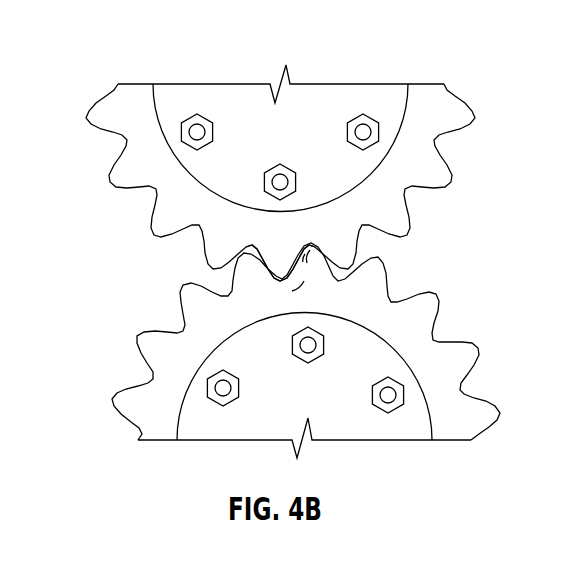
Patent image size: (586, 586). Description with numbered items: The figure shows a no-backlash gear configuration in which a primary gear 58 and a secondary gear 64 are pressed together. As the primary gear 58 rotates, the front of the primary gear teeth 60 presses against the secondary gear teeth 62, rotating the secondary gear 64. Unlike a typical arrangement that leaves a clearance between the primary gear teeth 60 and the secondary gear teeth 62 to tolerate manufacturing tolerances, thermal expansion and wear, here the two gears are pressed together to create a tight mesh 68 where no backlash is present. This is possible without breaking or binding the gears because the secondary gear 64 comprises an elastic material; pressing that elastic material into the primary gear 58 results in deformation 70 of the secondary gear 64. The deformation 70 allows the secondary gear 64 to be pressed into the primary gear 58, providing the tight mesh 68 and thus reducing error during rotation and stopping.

The primary gear 58 is at (200, 103).
The primary gear teeth 60 is at (121, 176).
The secondary gear teeth 62 is at (152, 345).
The secondary gear 64 is at (357, 420).
The tight mesh 68 is at (275, 267).
The deformation 70 is at (314, 288).